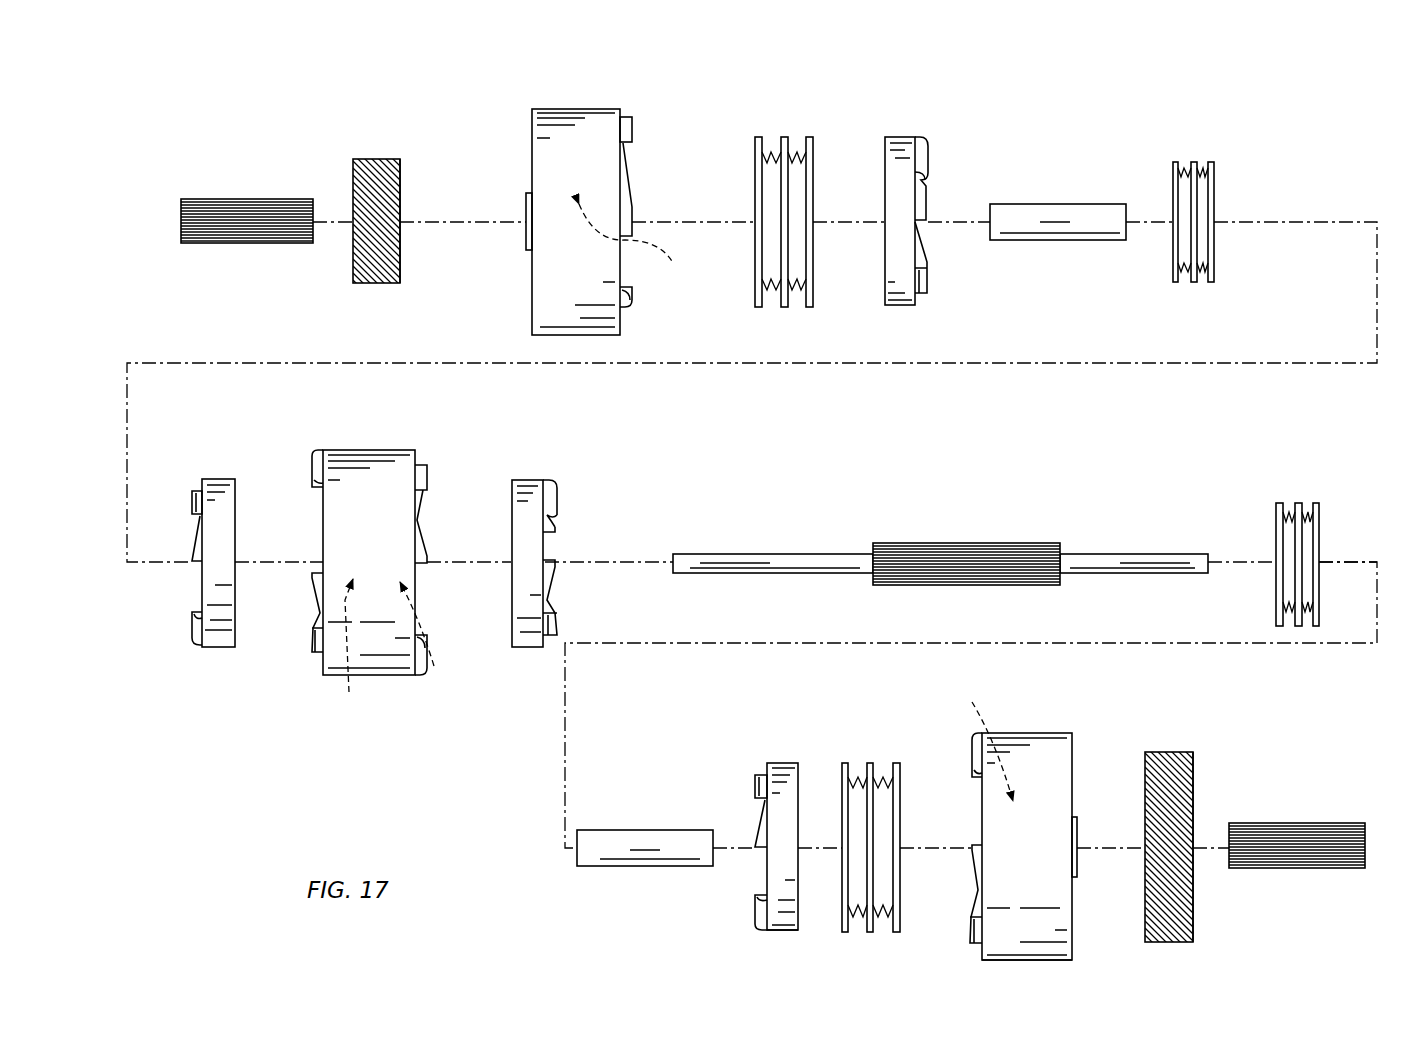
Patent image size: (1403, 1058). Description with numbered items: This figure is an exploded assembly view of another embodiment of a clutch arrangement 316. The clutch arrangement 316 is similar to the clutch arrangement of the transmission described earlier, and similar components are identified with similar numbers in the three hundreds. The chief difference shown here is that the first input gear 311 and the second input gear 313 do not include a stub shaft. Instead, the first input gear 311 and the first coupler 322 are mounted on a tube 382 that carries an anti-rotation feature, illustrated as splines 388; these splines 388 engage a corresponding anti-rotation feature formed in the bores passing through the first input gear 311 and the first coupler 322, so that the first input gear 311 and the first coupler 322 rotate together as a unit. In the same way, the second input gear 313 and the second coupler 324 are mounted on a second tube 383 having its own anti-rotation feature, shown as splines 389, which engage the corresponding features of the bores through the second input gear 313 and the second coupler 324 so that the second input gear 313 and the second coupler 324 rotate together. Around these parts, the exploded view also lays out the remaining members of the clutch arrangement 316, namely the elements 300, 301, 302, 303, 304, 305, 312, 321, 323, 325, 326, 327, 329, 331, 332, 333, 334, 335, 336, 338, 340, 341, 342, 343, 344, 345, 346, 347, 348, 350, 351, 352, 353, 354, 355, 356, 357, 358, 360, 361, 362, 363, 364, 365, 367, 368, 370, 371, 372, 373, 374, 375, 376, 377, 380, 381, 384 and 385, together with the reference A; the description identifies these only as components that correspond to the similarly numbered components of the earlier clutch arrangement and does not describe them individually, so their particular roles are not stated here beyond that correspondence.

The pulley 300 is at (832, 497).
The pulley 301 is at (1276, 337).
The pulley plates 302 is at (809, 136).
The pulley grooves 303 is at (1195, 161).
The pulley grooves 304 is at (797, 306).
The pulley grooves 305 is at (1194, 194).
The first input gear 311 is at (360, 201).
The shaft assembly 312 is at (943, 517).
The second input gear 313 is at (1200, 821).
The clutch arrangement 316 is at (1276, 165).
The shaft sleeve 321 is at (961, 542).
The first coupler 322 is at (549, 200).
The shaft portion 323 is at (788, 552).
The second coupler 324 is at (719, 809).
The shaft portion 325 is at (1176, 552).
The coupling member 326 is at (570, 457).
The shaft 327 is at (1057, 202).
The shaft 329 is at (638, 827).
The coupling member 331 is at (369, 565).
The coupling tab 332 is at (565, 106).
The coupling member 333 is at (202, 536).
The coupling member 334 is at (931, 198).
The coupling member 335 is at (576, 528).
The coupling member 336 is at (1021, 804).
The coupling end 338 is at (771, 760).
The coupling body 340 is at (591, 124).
The coupling body 341 is at (916, 128).
The tapered flange 342 is at (633, 208).
The rounded lip 343 is at (927, 133).
The side tab 344 is at (530, 259).
The lower tab 345 is at (882, 286).
The lower lip 346 is at (627, 308).
The hook 347 is at (921, 184).
The recess 348 is at (634, 247).
The coupling body 350 is at (1046, 791).
The coupling body 351 is at (793, 760).
The rounded lip 352 is at (970, 758).
The side tab 353 is at (753, 774).
The bottom end 354 is at (1073, 922).
The bottom end 355 is at (800, 921).
The lower flange 356 is at (982, 828).
The lower lip 357 is at (755, 878).
The recess 358 is at (980, 736).
The coupling body 360 is at (355, 447).
The lower flange 361 is at (322, 549).
The rounded lip 362 is at (310, 471).
The lower lip 363 is at (414, 658).
The side tab 364 is at (428, 462).
The recess 365 is at (350, 655).
The recess 367 is at (440, 678).
The top end 368 is at (358, 495).
The coupling body 370 is at (226, 477).
The coupling body 371 is at (541, 478).
The side tab 372 is at (190, 500).
The hook 373 is at (563, 488).
The lower lip 374 is at (200, 587).
The lower tab 375 is at (512, 636).
The tapered flange 376 is at (237, 634).
The lip bottom 377 is at (545, 531).
The worm gear face 380 is at (405, 189).
The worm gear face 381 is at (1195, 777).
The tube 382 is at (218, 201).
The tube 383 is at (1300, 883).
The worm gear 384 is at (376, 283).
The worm gear 385 is at (1150, 751).
The splines 388 is at (239, 245).
The splines 389 is at (1290, 868).
The axis A is at (1330, 562).